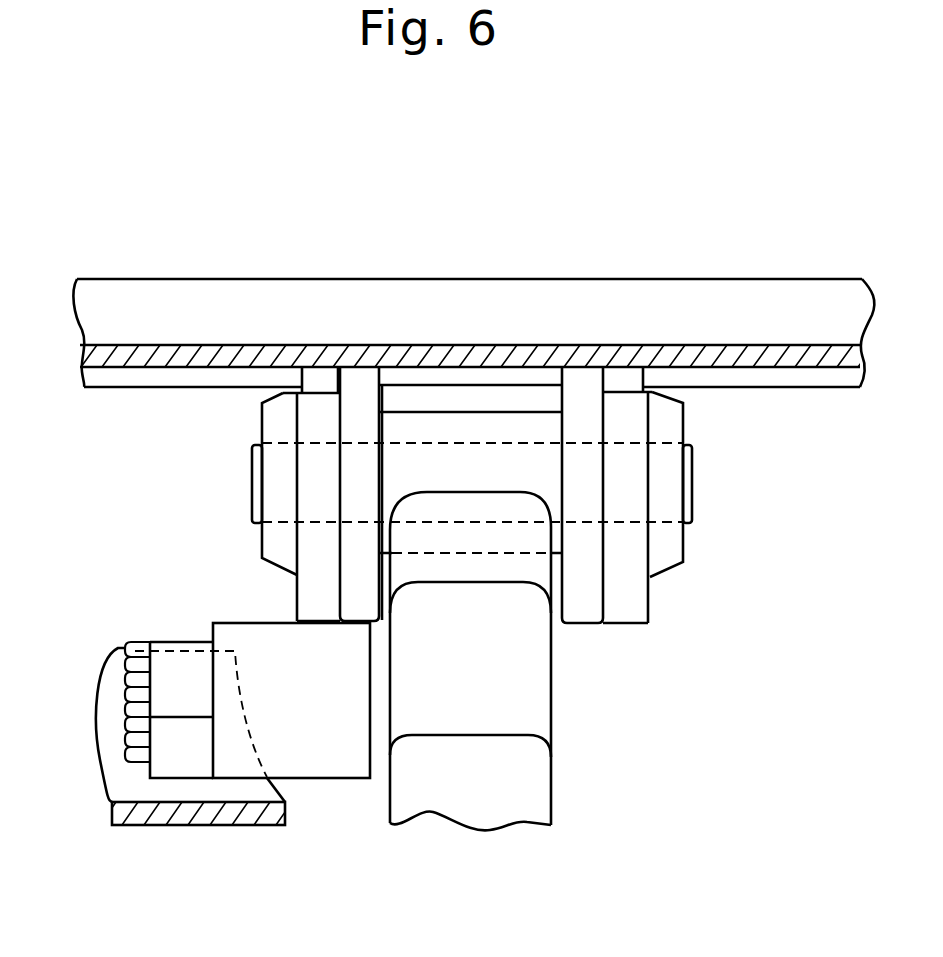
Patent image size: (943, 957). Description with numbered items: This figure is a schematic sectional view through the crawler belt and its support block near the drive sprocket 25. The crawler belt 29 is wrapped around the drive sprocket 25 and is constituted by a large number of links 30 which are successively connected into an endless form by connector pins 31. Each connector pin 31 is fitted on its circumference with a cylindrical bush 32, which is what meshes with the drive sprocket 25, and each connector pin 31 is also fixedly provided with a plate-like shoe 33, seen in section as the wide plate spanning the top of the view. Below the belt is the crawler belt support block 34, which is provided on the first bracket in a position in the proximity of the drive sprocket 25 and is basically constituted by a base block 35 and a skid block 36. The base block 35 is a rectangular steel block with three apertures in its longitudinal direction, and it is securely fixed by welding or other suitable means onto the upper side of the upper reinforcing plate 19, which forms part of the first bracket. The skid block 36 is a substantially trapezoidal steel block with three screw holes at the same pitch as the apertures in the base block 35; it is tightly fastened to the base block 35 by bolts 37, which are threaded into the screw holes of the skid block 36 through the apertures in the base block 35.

The upper reinforcing plate 19 is at (213, 817).
The drive sprocket 25 is at (538, 717).
The crawler belt 29 is at (232, 410).
The link 30 is at (322, 380).
The connector pin 31 is at (692, 487).
The cylindrical bush 32 is at (490, 425).
The plate-like shoe 33 is at (767, 315).
The crawler belt support block 34 is at (196, 608).
The base block 35 is at (172, 763).
The skid block 36 is at (330, 755).
The bolt 37 is at (133, 663).